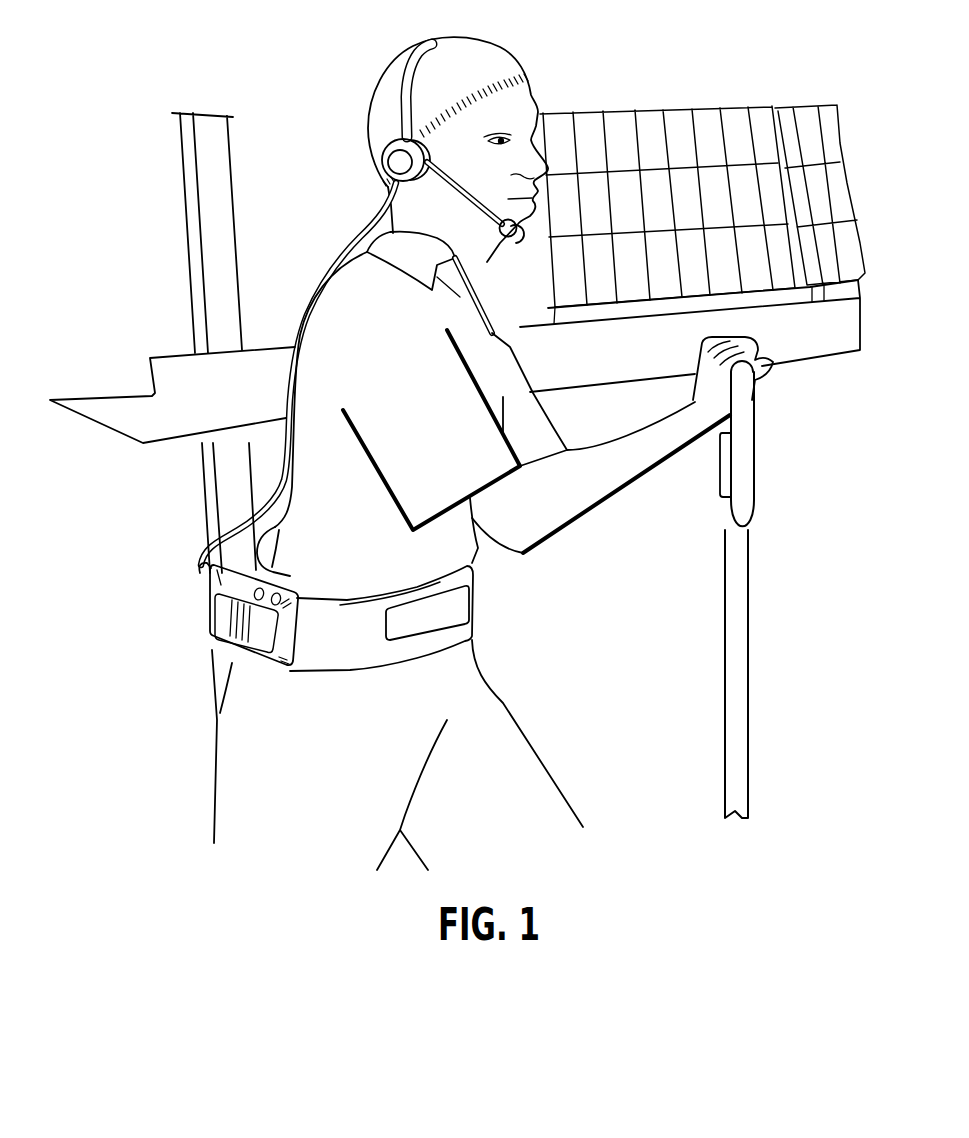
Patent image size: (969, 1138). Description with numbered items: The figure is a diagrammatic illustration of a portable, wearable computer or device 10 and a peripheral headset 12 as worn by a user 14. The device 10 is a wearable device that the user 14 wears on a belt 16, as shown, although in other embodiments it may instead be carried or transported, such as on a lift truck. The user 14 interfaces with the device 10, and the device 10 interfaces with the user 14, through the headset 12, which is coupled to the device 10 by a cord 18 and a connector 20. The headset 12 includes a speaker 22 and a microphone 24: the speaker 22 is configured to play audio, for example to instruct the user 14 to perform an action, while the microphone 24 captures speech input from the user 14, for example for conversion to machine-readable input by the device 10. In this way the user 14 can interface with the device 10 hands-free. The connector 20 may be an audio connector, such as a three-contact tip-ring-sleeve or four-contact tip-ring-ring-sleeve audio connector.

The device 10 is at (220, 656).
The headset 12 is at (401, 74).
The user 14 is at (410, 379).
The belt 16 is at (475, 610).
The cord 18 is at (288, 392).
The connector 20 is at (208, 576).
The speaker 22 is at (394, 147).
The microphone 24 is at (499, 230).